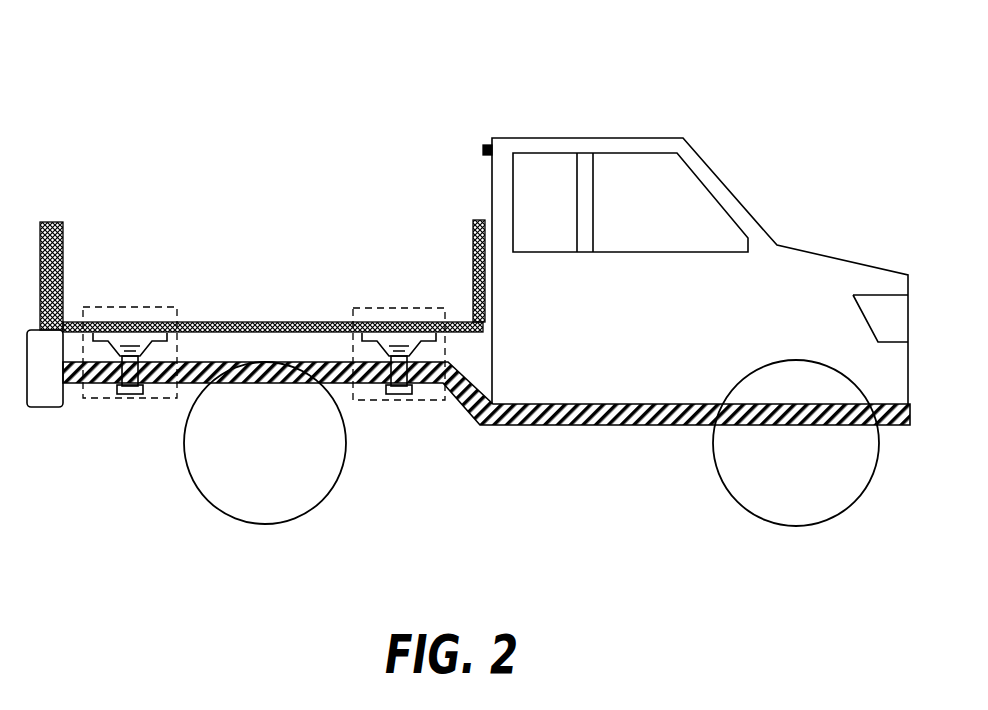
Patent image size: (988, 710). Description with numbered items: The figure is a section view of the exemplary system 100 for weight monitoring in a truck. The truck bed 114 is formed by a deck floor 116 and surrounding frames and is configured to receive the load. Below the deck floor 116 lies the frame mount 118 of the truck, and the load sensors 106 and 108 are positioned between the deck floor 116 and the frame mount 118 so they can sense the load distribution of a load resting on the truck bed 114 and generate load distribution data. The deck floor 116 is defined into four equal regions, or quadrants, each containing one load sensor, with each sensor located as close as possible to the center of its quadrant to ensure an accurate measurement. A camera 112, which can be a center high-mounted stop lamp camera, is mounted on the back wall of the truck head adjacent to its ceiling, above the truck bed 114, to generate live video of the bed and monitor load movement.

The system for weight monitoring 100 is at (110, 104).
The load sensor 106 is at (123, 307).
The load sensor 108 is at (393, 307).
The camera 112 is at (483, 150).
The truck bed 114 is at (160, 221).
The deck floor 116 is at (270, 322).
The frame mount 118 is at (220, 377).